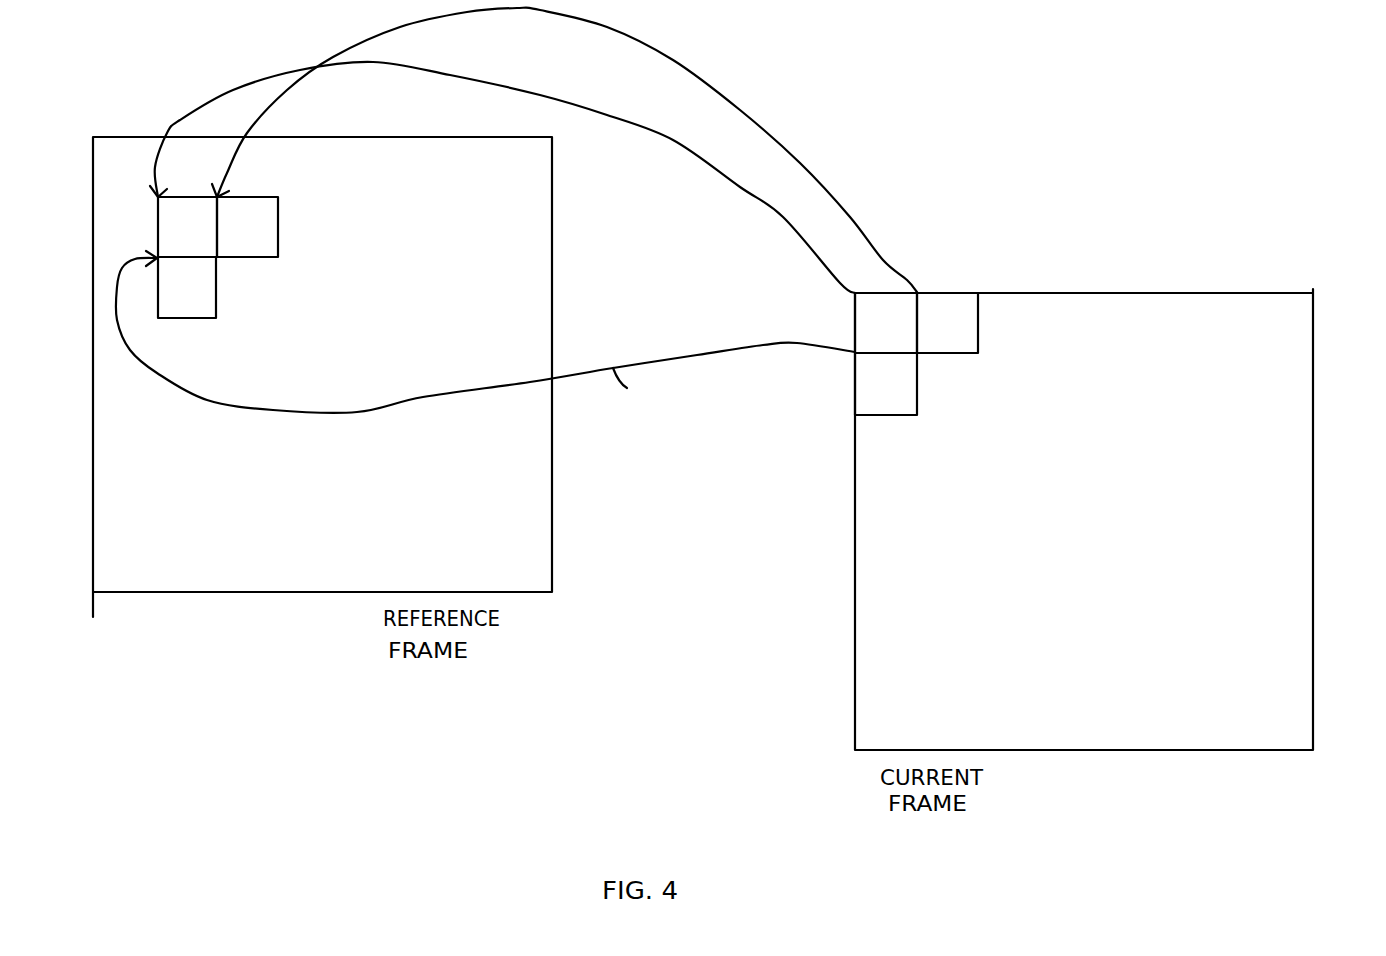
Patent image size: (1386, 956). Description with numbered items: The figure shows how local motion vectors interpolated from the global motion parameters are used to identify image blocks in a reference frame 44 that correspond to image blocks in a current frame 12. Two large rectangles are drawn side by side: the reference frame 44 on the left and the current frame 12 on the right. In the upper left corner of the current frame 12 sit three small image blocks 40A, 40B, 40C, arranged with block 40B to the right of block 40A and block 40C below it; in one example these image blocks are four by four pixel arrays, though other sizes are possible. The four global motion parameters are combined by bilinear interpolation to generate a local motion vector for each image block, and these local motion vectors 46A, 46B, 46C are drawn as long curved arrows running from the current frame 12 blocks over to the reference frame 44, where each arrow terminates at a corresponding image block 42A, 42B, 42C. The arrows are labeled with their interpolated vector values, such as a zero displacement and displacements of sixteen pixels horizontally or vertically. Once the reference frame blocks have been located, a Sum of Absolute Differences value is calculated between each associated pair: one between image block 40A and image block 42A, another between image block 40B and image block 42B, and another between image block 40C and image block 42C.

The current frame 12 is at (1318, 368).
The reference frame 44 is at (545, 507).
The image block 40A is at (853, 315).
The image block 40B is at (950, 293).
The image block 40C is at (917, 387).
The image block 42A is at (181, 192).
The image block 42B is at (279, 220).
The image block 42C is at (217, 285).
The local motion vector 46A is at (663, 141).
The local motion vector 46B is at (797, 160).
The local motion vector 46C is at (730, 353).